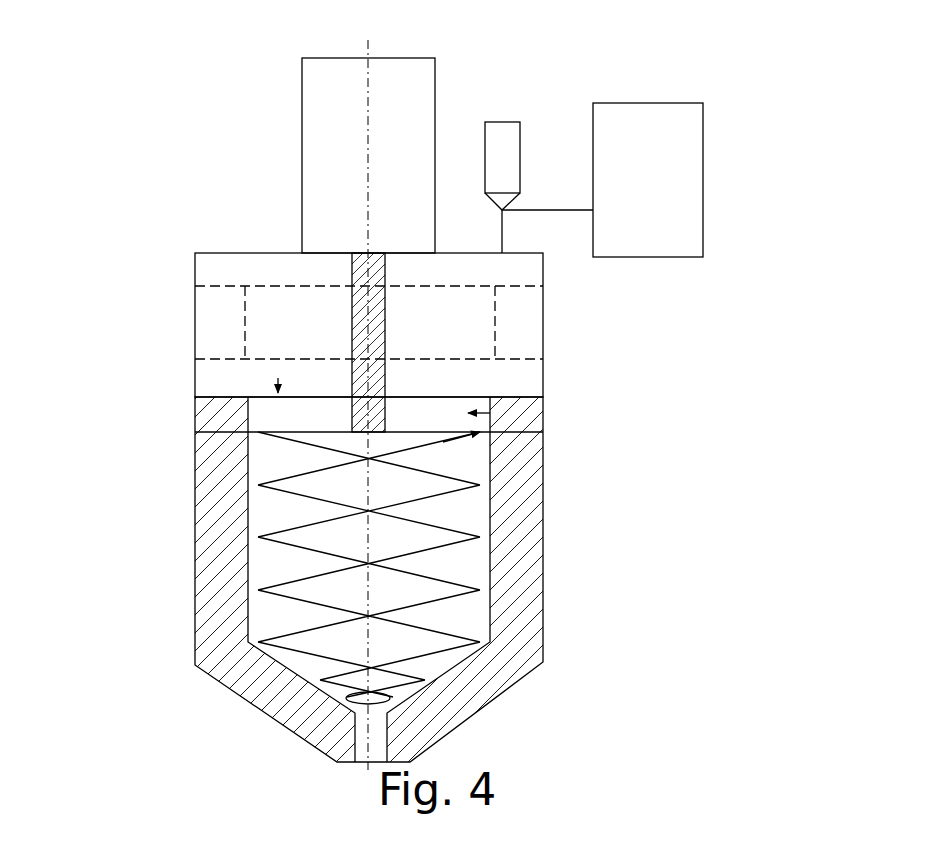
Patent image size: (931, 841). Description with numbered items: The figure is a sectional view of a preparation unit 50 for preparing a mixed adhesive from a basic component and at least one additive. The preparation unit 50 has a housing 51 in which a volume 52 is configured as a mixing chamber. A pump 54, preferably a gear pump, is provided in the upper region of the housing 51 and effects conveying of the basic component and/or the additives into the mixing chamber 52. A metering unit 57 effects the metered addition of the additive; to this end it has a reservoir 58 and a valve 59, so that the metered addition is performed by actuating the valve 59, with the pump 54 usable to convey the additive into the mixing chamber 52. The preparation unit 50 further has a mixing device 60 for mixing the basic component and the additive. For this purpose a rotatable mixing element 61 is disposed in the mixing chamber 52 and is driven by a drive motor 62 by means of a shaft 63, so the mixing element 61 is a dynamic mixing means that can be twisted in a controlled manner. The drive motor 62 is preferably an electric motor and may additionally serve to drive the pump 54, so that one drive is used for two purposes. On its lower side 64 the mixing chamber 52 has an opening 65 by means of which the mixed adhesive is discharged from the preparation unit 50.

The preparation unit 50 is at (142, 215).
The housing 51 is at (543, 485).
The mixing chamber 52 is at (467, 613).
The pump 54 is at (543, 335).
The metering unit 57 is at (600, 70).
The reservoir 58 is at (703, 157).
The valve 59 is at (520, 137).
The mixing device 60 is at (157, 327).
The mixing element 61 is at (478, 537).
The drive motor 62 is at (437, 78).
The shaft 63 is at (353, 317).
The lower side 64 is at (283, 720).
The opening 65 is at (392, 720).